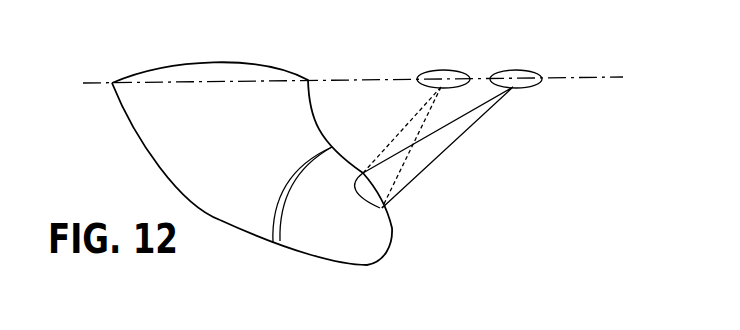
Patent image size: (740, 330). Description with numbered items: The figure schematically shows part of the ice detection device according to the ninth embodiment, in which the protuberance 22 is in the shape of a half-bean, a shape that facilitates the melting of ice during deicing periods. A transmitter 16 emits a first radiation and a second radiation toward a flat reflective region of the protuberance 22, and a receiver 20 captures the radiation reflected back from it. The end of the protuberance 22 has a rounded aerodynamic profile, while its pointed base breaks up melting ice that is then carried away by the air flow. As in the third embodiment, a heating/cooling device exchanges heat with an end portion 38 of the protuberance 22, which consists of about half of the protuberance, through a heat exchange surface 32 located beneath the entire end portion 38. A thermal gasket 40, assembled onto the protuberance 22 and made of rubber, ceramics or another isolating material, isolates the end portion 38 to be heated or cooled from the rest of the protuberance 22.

The transmitter 16 is at (525, 75).
The receiver 20 is at (440, 73).
The protuberance 22 is at (148, 129).
The heat exchange surface 32 is at (375, 240).
The end portion 38 is at (305, 232).
The thermal gasket 40 is at (275, 238).